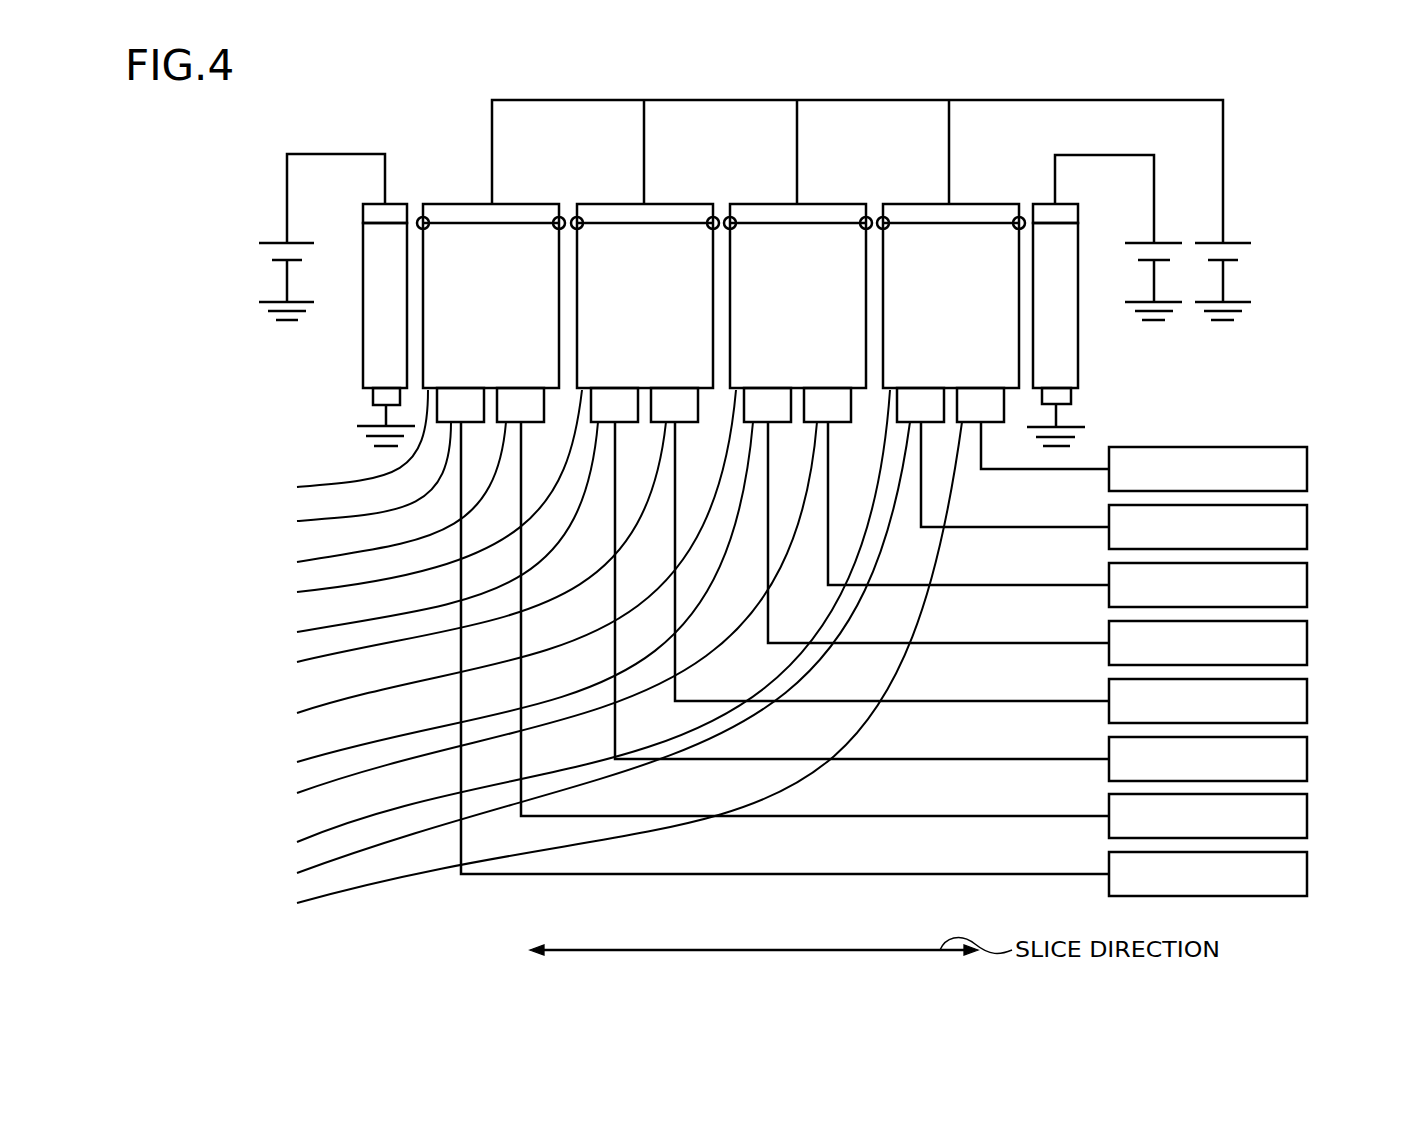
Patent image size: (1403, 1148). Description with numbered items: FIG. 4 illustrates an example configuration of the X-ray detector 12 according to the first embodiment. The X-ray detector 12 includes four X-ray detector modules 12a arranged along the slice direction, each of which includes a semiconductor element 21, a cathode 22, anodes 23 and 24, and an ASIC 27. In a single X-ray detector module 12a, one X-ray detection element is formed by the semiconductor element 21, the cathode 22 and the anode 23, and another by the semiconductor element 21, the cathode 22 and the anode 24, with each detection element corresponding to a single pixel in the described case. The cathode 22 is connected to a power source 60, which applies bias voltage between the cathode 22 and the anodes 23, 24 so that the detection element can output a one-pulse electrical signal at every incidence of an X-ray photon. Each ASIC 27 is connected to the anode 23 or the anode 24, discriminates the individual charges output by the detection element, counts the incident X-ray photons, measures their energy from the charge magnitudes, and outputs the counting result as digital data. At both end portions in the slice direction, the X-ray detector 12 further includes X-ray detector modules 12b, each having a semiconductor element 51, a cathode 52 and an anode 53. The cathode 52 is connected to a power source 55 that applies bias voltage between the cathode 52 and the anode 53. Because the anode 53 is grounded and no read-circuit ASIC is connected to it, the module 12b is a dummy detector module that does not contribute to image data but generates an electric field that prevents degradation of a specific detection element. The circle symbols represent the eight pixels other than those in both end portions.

The X-ray detector 12 is at (1340, 85).
The X-ray detector module 12a is at (533, 186).
The X-ray detector module 12b is at (347, 246).
The cathode 22 is at (438, 203).
The cathode 52 is at (373, 204).
The power source 55 is at (275, 242).
The power source 60 is at (1238, 243).
The semiconductor element 51 is at (363, 352).
The anode 53 is at (373, 393).
The semiconductor element 21 is at (545, 622).
The anode 23 is at (555, 653).
The anode 24 is at (581, 668).
The ASIC 27 is at (1307, 462).